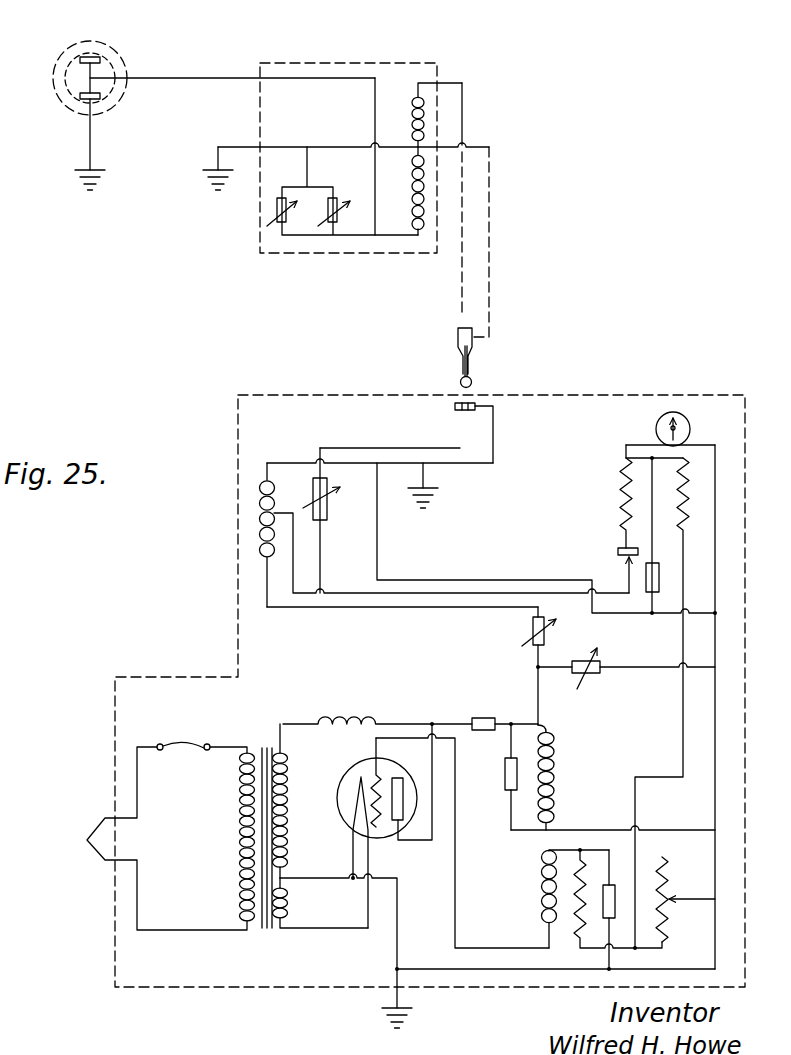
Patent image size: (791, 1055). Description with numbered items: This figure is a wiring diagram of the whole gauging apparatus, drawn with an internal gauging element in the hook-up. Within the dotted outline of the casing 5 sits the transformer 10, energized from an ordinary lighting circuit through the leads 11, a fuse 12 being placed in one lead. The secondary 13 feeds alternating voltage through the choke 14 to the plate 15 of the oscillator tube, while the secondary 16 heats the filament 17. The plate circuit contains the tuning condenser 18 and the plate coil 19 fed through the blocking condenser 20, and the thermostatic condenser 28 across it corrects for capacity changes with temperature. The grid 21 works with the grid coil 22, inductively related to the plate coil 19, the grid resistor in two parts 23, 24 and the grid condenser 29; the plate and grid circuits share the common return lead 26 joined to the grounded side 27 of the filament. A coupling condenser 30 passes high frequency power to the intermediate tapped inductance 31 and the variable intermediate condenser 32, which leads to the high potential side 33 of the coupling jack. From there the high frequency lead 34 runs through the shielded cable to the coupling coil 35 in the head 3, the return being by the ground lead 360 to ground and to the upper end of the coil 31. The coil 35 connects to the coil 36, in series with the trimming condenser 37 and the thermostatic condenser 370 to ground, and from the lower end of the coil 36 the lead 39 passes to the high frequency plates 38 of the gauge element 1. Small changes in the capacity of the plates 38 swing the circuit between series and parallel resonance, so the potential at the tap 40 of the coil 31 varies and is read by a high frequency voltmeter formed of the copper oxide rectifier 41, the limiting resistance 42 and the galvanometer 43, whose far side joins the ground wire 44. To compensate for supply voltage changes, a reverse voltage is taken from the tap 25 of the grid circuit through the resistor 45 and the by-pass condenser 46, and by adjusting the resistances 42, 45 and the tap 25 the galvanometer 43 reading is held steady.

The gauge element 1 is at (55, 72).
The head unit 3 is at (437, 62).
The casing unit 5 is at (242, 990).
The transformer 10 is at (264, 748).
The leads 11 is at (158, 838).
The fuse 12 is at (180, 752).
The secondary 13 is at (290, 782).
The choke 14 is at (348, 714).
The plate 15 is at (400, 790).
The secondary 16 is at (290, 904).
The filament 17 is at (355, 802).
The tuning condenser 18 is at (505, 776).
The plate coil 19 is at (556, 760).
The blocking condenser 20 is at (472, 718).
The grid 21 is at (380, 829).
The grid coil 22 is at (540, 864).
The grid resistor part 23 is at (590, 858).
The grid resistor part 24 is at (668, 930).
The tap 25 is at (680, 897).
The common return lead 26 is at (425, 968).
The grounded side of filament 27 is at (397, 925).
The thermostatic condenser 28 is at (608, 662).
The grid condenser 29 is at (611, 884).
The coupling condenser 30 is at (532, 630).
The intermediate tapped inductance 31 is at (258, 550).
The intermediate condenser 32 is at (327, 516).
The high potential side of coupling jack 33 is at (460, 448).
The high frequency lead 34 is at (460, 278).
The coupling coil 35 is at (411, 102).
The coil 36 is at (411, 195).
The trimming condenser 37 is at (277, 208).
The high frequency plates 38 is at (92, 57).
The high frequency lead 39 is at (204, 76).
The tap 40 is at (284, 512).
The copper oxide rectifier 41 is at (618, 552).
The limiting resistance 42 is at (620, 480).
The galvanometer 43 is at (655, 430).
The ground wire 44 is at (480, 580).
The resistor 45 is at (690, 507).
The by-pass condenser 46 is at (663, 584).
The ground lead 360 is at (492, 276).
The thermostatic condenser 370 is at (333, 205).